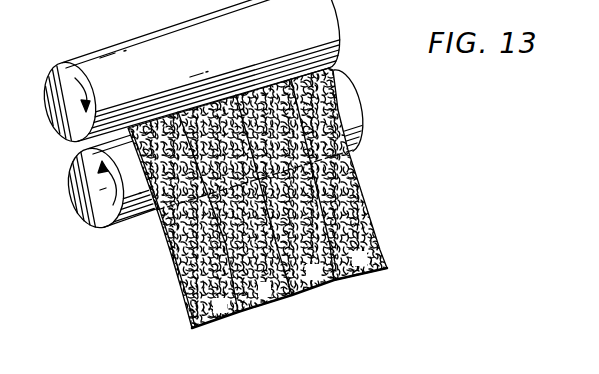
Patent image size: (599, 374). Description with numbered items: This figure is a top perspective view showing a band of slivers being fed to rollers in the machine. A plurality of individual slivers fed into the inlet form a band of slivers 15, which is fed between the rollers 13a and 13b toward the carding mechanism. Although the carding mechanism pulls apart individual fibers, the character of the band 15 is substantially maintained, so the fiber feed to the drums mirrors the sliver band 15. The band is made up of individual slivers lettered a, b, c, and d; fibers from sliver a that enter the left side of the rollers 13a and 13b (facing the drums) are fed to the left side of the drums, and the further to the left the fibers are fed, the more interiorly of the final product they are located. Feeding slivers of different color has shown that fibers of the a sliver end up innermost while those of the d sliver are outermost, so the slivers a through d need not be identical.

The roller 13a is at (335, 12).
The roller 13b is at (363, 105).
The band of slivers 15 is at (370, 222).